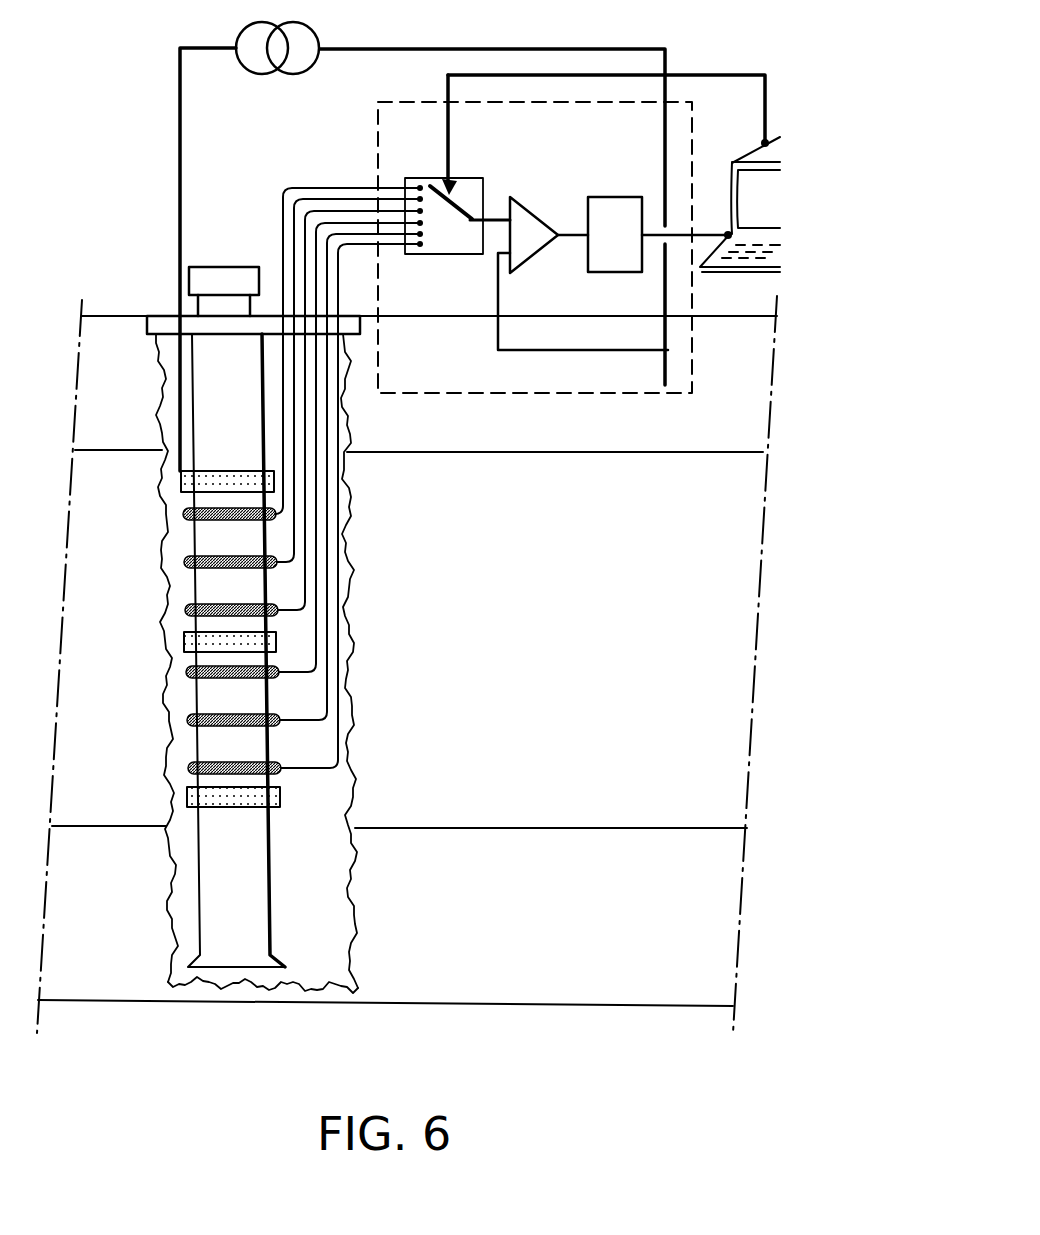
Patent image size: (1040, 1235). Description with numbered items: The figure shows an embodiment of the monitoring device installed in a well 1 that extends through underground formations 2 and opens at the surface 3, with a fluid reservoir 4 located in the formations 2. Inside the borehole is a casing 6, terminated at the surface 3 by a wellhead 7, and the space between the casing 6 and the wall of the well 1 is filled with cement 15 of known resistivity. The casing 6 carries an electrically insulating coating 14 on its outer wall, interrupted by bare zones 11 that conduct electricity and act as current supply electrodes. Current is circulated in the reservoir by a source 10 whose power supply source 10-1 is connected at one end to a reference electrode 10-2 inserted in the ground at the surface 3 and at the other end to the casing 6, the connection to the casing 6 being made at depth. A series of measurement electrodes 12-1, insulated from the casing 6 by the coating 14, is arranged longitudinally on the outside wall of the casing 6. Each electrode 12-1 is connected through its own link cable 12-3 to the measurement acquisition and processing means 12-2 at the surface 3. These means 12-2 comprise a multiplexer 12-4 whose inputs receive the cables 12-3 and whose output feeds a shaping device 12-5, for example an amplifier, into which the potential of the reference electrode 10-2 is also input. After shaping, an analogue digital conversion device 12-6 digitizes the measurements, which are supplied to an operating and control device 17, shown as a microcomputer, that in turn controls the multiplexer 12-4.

The well 1 is at (353, 887).
The underground formations 2 is at (88, 363).
The surface 3 is at (122, 316).
The fluid reservoir 4 is at (82, 592).
The casing 6 is at (196, 893).
The wellhead 7 is at (238, 275).
The current source 10 is at (240, 24).
The power supply source 10-1 is at (303, 28).
The reference electrode 10-2 is at (672, 362).
The bare zones 11 is at (220, 640).
The measurement electrodes 12-1 is at (187, 768).
The measurement acquisition and processing means 12-2 is at (388, 102).
The link cable 12-3 is at (340, 675).
The multiplexer 12-4 is at (405, 178).
The shaping device 12-5 is at (525, 215).
The analogue digital conversion device 12-6 is at (610, 205).
The coating 14 is at (208, 394).
The cement 15 is at (307, 933).
The operating and control device 17 is at (730, 165).